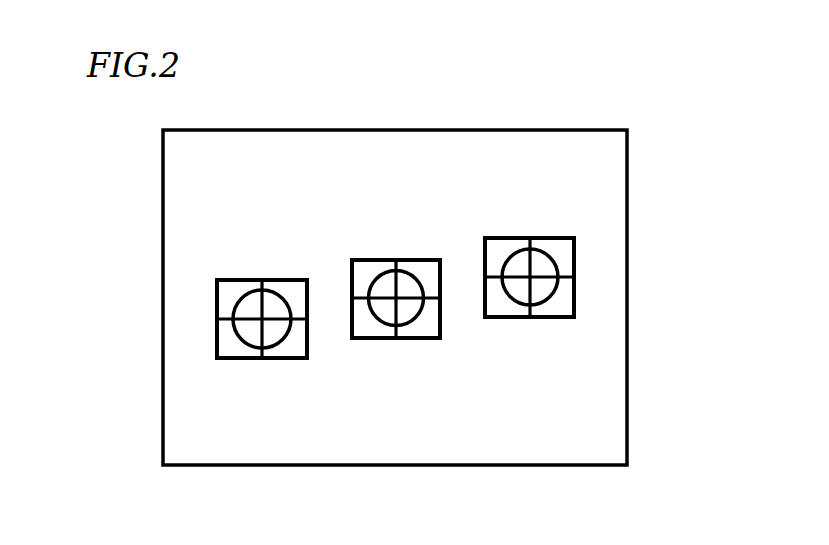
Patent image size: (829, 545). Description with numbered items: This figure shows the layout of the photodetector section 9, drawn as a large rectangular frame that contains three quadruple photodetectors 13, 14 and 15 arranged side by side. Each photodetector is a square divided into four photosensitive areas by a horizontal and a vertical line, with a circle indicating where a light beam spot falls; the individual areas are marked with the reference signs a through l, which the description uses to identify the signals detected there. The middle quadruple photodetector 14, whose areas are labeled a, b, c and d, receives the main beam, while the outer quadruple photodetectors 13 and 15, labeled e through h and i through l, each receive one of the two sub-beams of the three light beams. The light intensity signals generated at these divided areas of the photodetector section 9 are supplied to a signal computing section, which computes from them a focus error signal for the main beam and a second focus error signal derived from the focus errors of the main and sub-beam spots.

The photodetector section 9 is at (483, 130).
The quadruple photodetector 13 is at (217, 353).
The quadruple photodetector 14 is at (383, 338).
The quadruple photodetector 15 is at (541, 318).